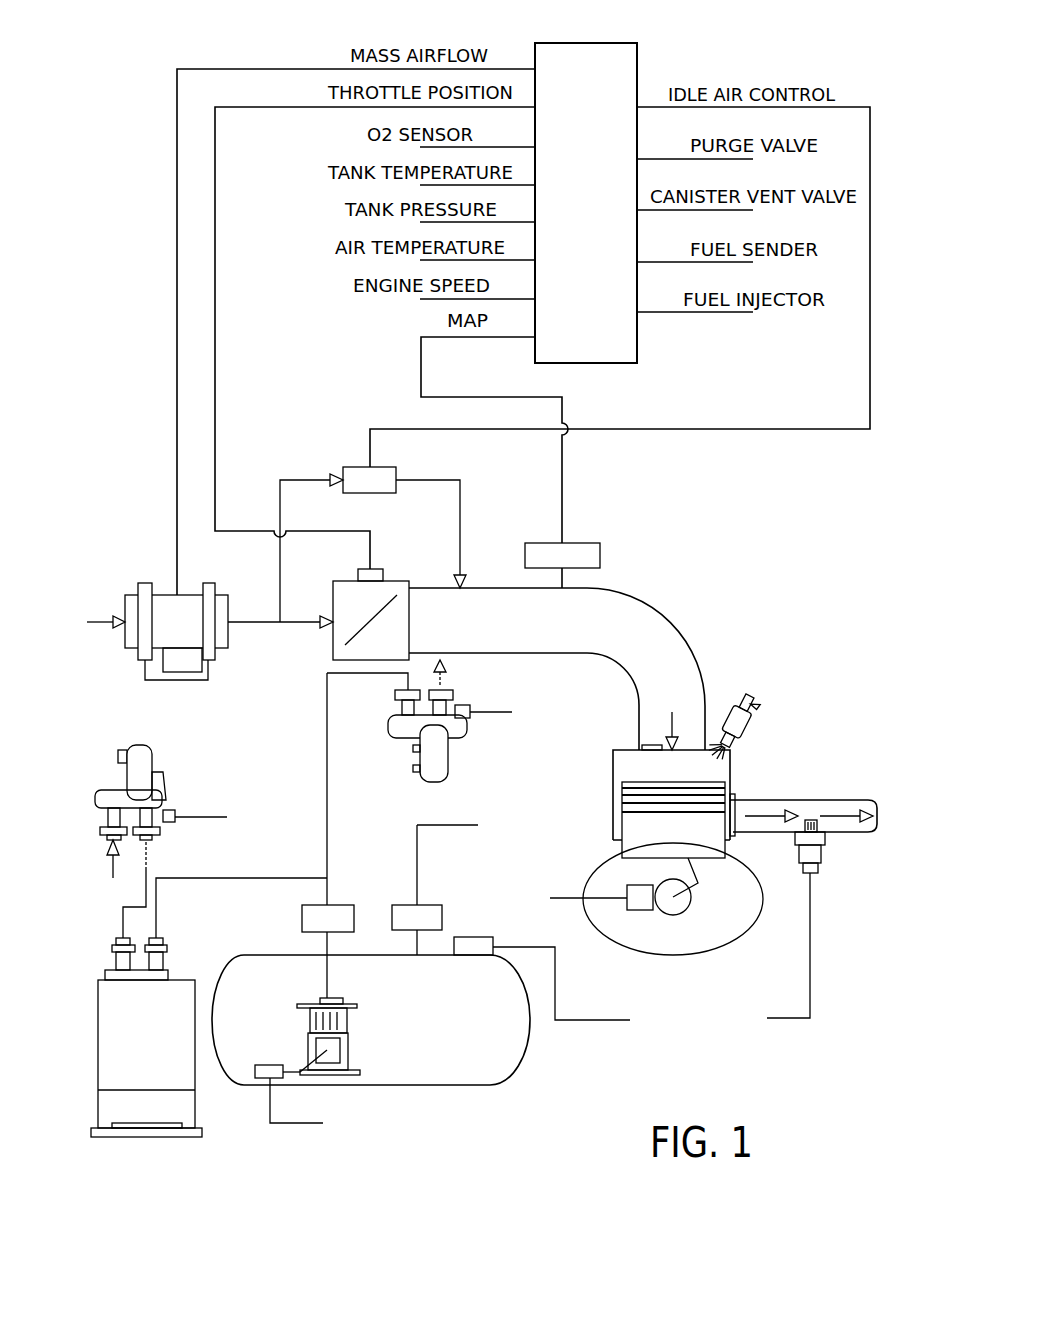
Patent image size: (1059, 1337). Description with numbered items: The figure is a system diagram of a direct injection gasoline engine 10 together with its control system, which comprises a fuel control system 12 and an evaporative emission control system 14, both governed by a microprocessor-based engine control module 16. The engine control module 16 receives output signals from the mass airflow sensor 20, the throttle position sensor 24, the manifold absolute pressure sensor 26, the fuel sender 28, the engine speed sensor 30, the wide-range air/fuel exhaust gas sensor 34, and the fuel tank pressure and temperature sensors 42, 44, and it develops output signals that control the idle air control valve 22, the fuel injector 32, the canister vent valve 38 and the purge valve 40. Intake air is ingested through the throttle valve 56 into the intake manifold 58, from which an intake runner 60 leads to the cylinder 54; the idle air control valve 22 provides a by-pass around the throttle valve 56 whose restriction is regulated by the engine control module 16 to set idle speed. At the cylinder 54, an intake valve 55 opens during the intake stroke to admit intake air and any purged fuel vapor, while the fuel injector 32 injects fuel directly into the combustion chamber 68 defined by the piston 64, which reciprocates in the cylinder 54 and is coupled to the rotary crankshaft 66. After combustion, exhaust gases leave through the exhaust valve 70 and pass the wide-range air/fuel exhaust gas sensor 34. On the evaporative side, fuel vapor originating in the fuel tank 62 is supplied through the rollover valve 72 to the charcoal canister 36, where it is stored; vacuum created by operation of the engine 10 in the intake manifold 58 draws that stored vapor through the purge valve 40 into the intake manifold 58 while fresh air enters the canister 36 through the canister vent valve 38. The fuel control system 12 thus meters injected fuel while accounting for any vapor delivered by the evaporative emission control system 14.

The direct injection gasoline engine 10 is at (805, 684).
The fuel control system 12 is at (240, 1136).
The evaporative emission control system 14 is at (150, 710).
The engine control module 16 is at (594, 100).
The mass airflow sensor 20 is at (188, 631).
The idle air control valve 22 is at (352, 467).
The throttle position sensor 24 is at (376, 569).
The manifold absolute pressure sensor 26 is at (585, 543).
The fuel sender 28 is at (275, 1065).
The engine speed sensor 30 is at (625, 906).
The fuel injector 32 is at (750, 735).
The wide-range air/fuel exhaust gas sensor 34 is at (825, 853).
The charcoal canister 36 is at (156, 1038).
The canister vent valve 38 is at (120, 772).
The purge valve 40 is at (457, 747).
The fuel tank pressure sensor 42 is at (397, 905).
The fuel tank temperature sensor 44 is at (473, 937).
The engine cylinder 54 is at (730, 765).
The intake valve 55 is at (640, 752).
The throttle valve 56 is at (365, 611).
The intake manifold 58 is at (500, 588).
The intake runner 60 is at (705, 665).
The fuel tank 62 is at (450, 1085).
The piston 64 is at (686, 845).
The crankshaft 66 is at (685, 915).
The combustion chamber 68 is at (637, 770).
The exhaust valve 70 is at (735, 832).
The rollover valve 72 is at (345, 905).